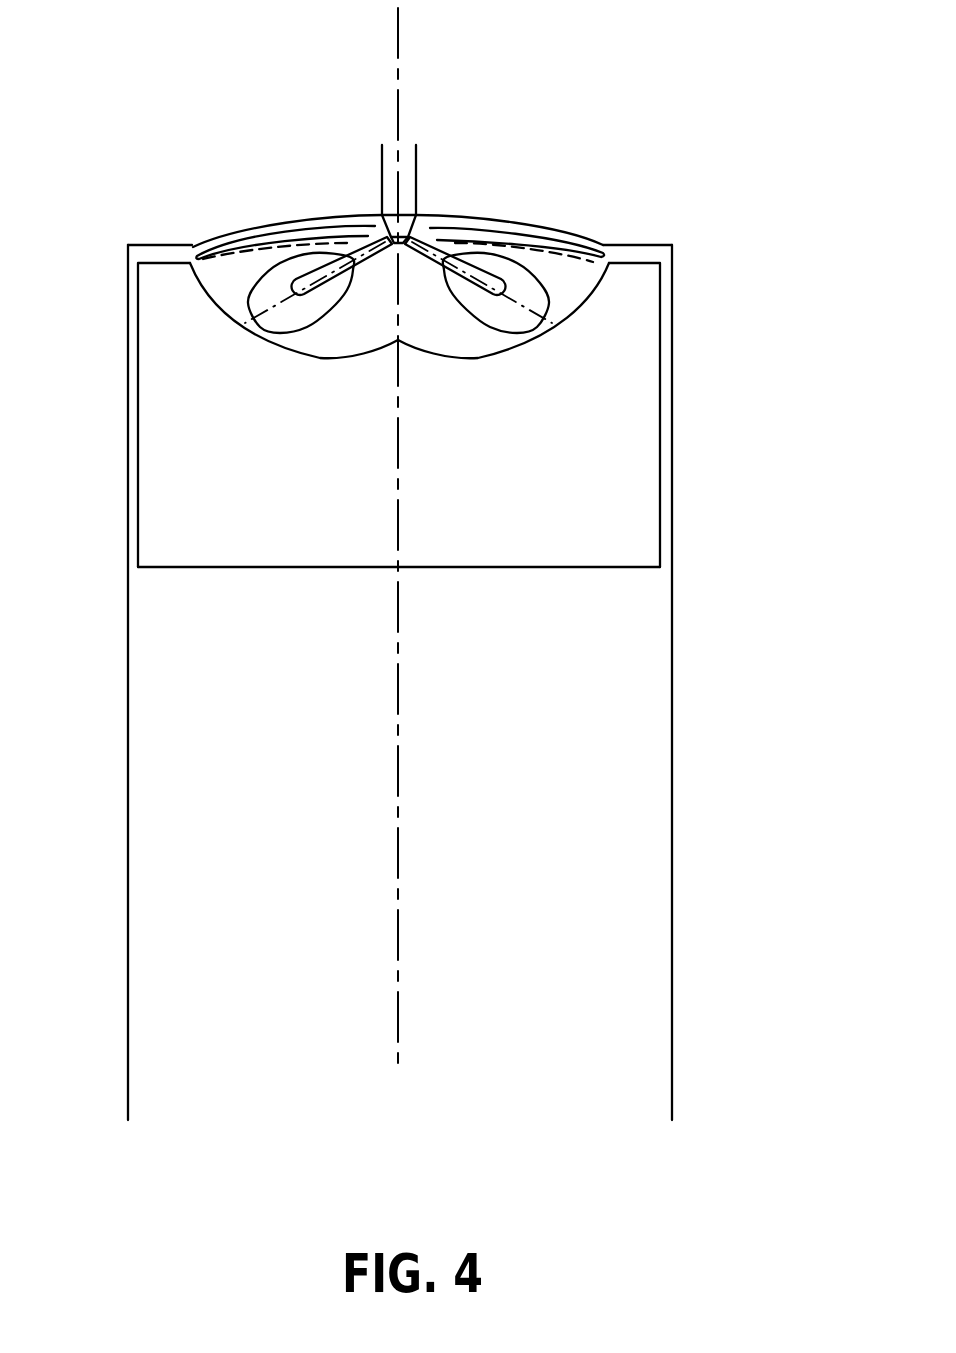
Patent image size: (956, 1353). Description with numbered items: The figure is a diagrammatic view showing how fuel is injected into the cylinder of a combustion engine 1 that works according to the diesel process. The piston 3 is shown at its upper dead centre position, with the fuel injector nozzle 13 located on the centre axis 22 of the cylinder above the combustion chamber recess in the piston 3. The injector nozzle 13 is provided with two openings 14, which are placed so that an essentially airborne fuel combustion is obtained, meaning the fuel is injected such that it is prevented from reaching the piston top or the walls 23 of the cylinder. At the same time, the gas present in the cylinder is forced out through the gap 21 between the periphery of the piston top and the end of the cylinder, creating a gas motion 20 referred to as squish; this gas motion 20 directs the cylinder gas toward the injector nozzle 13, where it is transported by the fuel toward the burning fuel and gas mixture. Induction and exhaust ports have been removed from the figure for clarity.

The combustion engine 1 is at (259, 158).
The piston 3 is at (627, 400).
The fuel injector nozzle 13 is at (444, 227).
The openings 14 is at (396, 242).
The gas motion 20 is at (510, 232).
The gap 21 is at (645, 257).
The centre axis 22 is at (398, 862).
The walls 23 is at (672, 711).